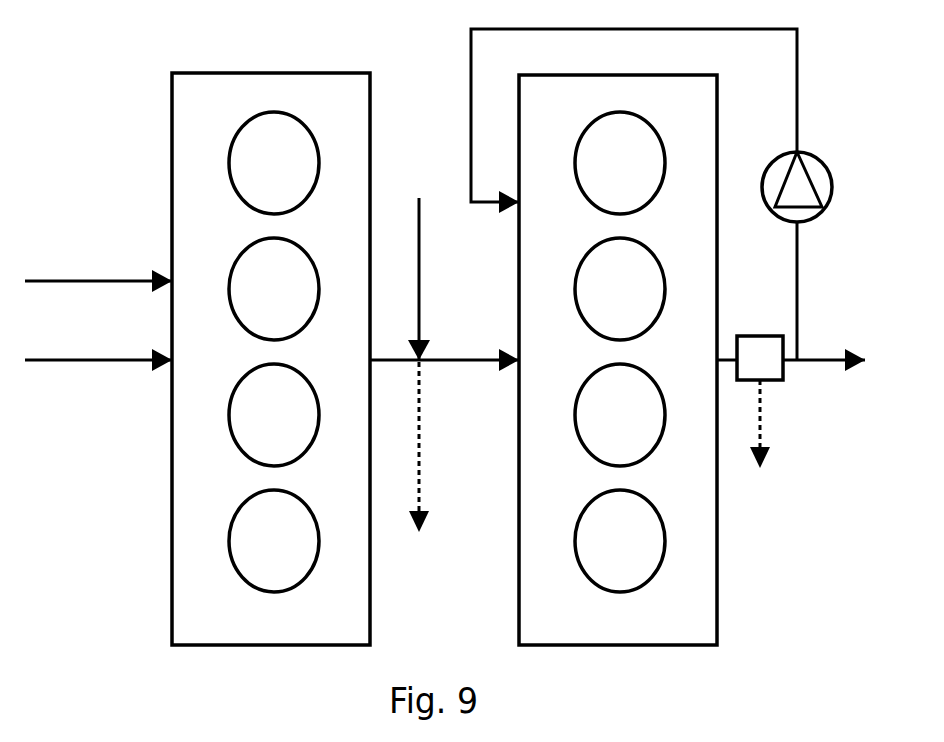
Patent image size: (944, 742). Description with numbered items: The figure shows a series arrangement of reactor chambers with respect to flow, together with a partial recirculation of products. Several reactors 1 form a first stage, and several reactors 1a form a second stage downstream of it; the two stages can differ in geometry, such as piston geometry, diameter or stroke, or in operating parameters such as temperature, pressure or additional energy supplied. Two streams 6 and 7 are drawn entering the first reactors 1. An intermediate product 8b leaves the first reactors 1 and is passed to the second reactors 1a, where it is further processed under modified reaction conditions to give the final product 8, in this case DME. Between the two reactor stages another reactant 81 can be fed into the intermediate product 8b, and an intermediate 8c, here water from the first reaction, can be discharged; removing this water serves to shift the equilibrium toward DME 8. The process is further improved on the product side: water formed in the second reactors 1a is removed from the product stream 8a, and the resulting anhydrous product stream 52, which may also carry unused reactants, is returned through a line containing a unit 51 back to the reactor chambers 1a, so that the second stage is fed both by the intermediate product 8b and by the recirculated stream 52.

The reactor 1 is at (271, 359).
The second reactor 1a is at (618, 360).
The first inlet stream 6 is at (98, 259).
The second inlet stream 7 is at (98, 337).
The final product 8 is at (791, 346).
The product stream 8a is at (779, 424).
The intermediate product 8b is at (444, 335).
The intermediate 8c is at (421, 465).
The reactant 81 is at (407, 249).
The pump 51 is at (825, 187).
The anhydrous product stream 52 is at (662, 194).